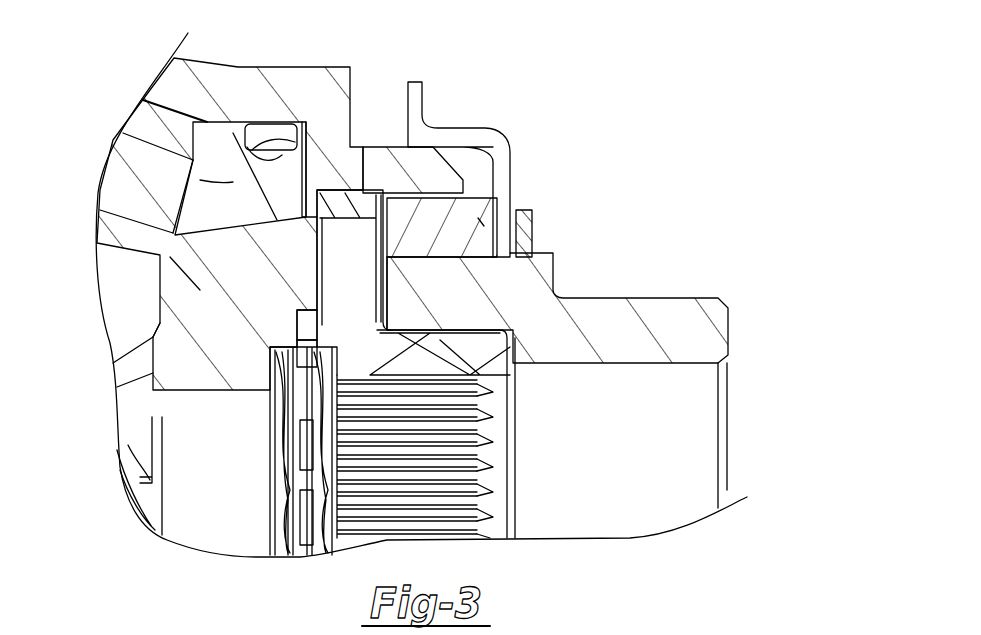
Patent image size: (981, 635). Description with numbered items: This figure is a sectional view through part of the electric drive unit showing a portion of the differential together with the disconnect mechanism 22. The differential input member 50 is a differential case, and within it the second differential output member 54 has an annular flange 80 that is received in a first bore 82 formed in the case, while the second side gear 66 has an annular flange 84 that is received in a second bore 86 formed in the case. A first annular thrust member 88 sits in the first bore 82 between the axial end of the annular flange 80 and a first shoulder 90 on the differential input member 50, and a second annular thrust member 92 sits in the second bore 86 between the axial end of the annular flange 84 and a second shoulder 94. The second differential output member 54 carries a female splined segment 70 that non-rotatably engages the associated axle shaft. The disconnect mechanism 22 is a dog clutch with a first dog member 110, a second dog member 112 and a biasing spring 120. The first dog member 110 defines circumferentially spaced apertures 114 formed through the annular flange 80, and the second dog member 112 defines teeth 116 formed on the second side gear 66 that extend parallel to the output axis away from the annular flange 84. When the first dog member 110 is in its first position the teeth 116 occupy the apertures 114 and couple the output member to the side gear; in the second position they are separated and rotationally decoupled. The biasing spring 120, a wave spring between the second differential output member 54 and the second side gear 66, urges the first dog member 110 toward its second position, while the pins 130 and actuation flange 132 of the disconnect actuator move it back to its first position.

The disconnect mechanism 22 is at (330, 315).
The differential input member 50 is at (220, 100).
The second differential output member 54 is at (457, 348).
The second side gear 66 is at (187, 242).
The female splined segment 70 is at (450, 478).
The annular flange 80 is at (357, 207).
The first bore 82 is at (344, 186).
The annular flange 84 is at (273, 132).
The second bore 86 is at (263, 122).
The first annular thrust member 88 is at (390, 228).
The first shoulder 90 is at (387, 311).
The second annular thrust member 92 is at (293, 182).
The second shoulder 94 is at (303, 150).
The first dog member 110 is at (293, 337).
The second dog member 112 is at (277, 335).
The apertures 114 is at (360, 273).
The teeth 116 is at (303, 280).
The biasing spring 120 is at (275, 398).
The pins 130 is at (480, 222).
The actuation flange 132 is at (468, 133).